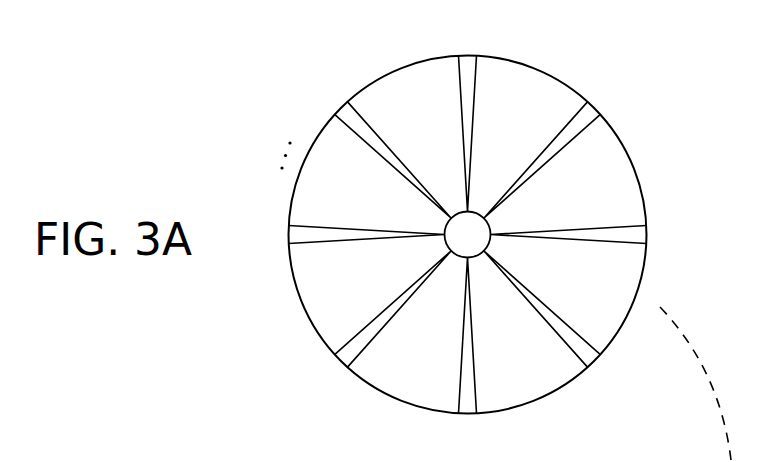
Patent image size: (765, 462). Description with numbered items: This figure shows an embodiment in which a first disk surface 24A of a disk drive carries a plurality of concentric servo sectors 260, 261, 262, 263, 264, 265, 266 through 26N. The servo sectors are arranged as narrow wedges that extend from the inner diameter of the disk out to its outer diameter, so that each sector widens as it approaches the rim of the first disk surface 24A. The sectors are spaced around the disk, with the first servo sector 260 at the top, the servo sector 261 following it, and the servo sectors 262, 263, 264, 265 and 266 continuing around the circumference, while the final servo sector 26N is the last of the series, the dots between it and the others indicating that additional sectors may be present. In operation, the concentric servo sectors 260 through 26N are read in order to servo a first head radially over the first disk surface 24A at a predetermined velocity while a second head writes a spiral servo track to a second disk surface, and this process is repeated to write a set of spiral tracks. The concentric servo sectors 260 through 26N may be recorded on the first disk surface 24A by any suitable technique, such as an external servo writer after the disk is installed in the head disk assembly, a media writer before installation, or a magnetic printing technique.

The first disk surface 24A is at (574, 86).
The concentric servo sector 260 is at (467, 63).
The concentric servo sector 261 is at (592, 113).
The concentric servo sector 262 is at (648, 234).
The concentric servo sector 263 is at (592, 360).
The concentric servo sector 264 is at (473, 408).
The concentric servo sector 265 is at (340, 358).
The concentric servo sector 266 is at (287, 236).
The concentric servo sector 26N is at (341, 107).